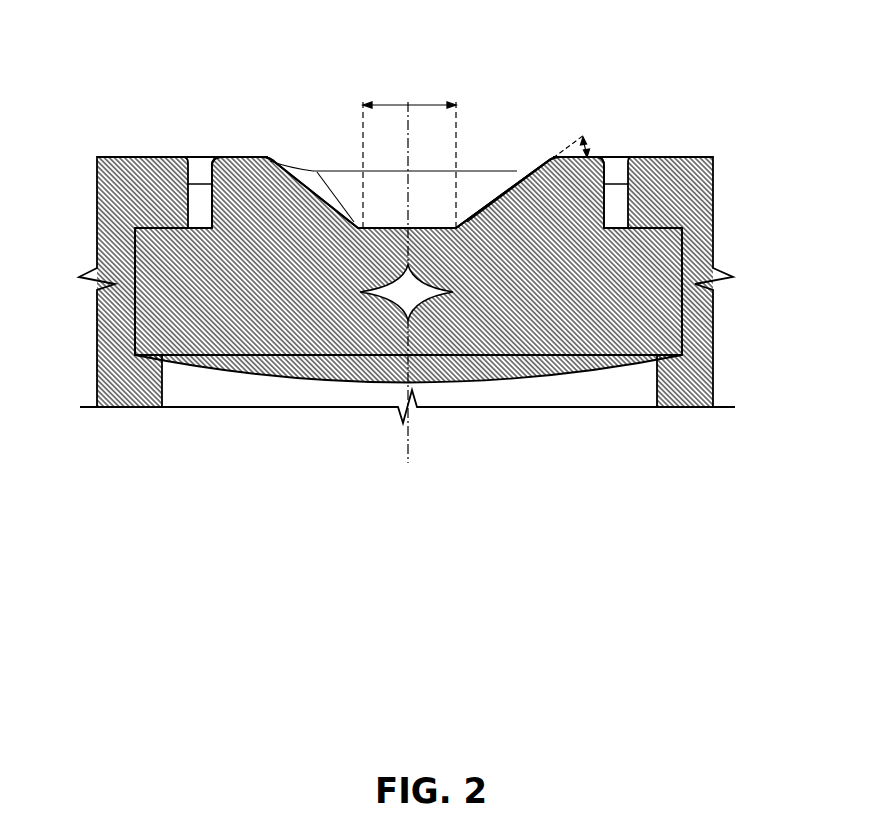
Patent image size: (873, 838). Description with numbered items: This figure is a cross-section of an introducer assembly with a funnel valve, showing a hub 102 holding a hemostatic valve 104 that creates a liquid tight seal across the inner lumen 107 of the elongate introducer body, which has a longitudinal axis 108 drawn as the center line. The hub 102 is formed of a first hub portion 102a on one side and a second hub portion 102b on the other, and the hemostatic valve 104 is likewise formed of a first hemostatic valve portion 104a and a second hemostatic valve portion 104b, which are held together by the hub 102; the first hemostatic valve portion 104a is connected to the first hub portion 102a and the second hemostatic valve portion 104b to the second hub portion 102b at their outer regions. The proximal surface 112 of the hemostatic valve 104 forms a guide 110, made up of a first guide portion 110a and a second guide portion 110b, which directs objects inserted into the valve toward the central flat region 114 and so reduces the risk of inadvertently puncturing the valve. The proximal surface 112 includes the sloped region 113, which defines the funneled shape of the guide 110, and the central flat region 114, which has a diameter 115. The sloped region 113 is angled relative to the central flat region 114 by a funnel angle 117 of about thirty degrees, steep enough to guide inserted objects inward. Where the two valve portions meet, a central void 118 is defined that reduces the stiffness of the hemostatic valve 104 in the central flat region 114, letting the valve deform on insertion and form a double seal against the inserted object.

The hub 102 is at (712, 58).
The first hub portion 102a is at (108, 345).
The second hub portion 102b is at (700, 313).
The hemostatic valve 104 is at (268, 307).
The first hemostatic valve portion 104a is at (203, 293).
The second hemostatic valve portion 104b is at (638, 275).
The inner lumen 107 is at (562, 383).
The longitudinal axis 108 is at (406, 449).
The guide 110 is at (242, 173).
The first guide portion 110a is at (230, 177).
The second guide portion 110b is at (577, 183).
The proximal surface 112 is at (375, 200).
The sloped region 113 is at (517, 186).
The central flat region 114 is at (437, 226).
The diameter 115 is at (407, 104).
The funnel angle 117 is at (589, 149).
The central void 118 is at (433, 295).